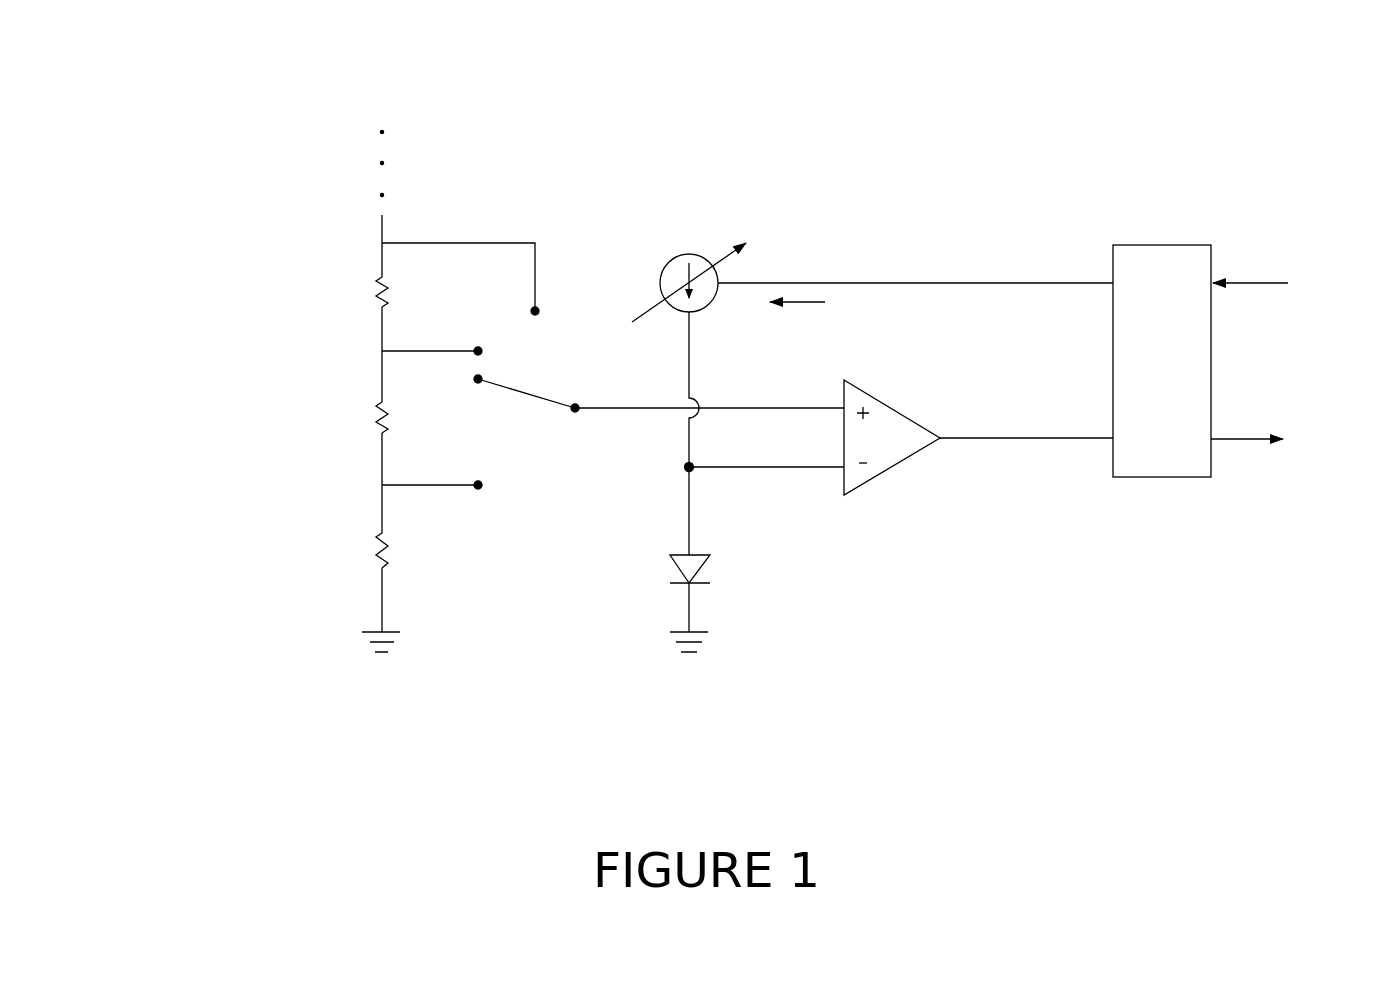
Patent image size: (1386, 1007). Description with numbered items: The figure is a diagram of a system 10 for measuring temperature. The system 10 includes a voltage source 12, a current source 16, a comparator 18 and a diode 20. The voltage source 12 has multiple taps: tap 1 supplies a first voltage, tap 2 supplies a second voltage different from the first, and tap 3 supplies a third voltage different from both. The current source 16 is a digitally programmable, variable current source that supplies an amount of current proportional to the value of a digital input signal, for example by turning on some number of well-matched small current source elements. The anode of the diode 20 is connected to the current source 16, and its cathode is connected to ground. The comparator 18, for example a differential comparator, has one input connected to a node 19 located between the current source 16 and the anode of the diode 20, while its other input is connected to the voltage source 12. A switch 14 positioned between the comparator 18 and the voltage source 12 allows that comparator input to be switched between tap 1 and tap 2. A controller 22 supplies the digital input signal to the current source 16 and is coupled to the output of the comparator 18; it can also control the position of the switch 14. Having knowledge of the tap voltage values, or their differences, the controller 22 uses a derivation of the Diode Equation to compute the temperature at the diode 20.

The system 10 is at (117, 38).
The voltage source 12 is at (363, 288).
The tap 1 is at (380, 485).
The tap 2 is at (380, 351).
The tap 3 is at (380, 242).
The switch 14 is at (508, 414).
The current source 16 is at (700, 220).
The comparator 18 is at (900, 478).
The node 19 is at (704, 478).
The diode 20 is at (653, 575).
The controller 22 is at (1158, 462).